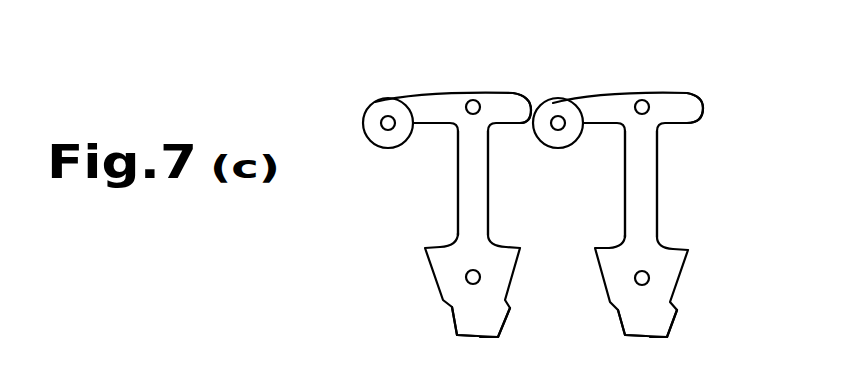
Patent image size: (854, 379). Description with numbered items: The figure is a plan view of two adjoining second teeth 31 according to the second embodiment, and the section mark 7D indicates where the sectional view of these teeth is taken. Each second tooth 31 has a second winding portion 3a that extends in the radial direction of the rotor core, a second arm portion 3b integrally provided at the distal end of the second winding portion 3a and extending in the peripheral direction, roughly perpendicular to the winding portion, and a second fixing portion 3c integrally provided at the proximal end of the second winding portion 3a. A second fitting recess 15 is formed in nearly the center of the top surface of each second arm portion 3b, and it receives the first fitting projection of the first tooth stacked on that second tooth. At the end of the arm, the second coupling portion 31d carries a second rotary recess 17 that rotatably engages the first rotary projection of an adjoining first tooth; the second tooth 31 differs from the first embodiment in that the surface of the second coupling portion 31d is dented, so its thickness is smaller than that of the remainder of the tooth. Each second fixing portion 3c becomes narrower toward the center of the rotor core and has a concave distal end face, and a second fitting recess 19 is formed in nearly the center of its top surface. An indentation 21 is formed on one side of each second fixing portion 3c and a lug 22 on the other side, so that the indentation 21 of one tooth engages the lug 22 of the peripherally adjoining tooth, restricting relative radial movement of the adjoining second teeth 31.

The second tooth 31 is at (427, 73).
The second coupling portion 31d is at (372, 108).
The second fitting recess 15 is at (473, 100).
The second rotary recess 17 is at (392, 128).
The second arm portion 3b is at (520, 82).
The second winding portion 3a is at (638, 202).
The second fixing portion 3c is at (438, 257).
The section line 7D is at (360, 123).
The second fitting recess 19 is at (635, 277).
The indentation 21 is at (453, 319).
The lug 22 is at (510, 320).